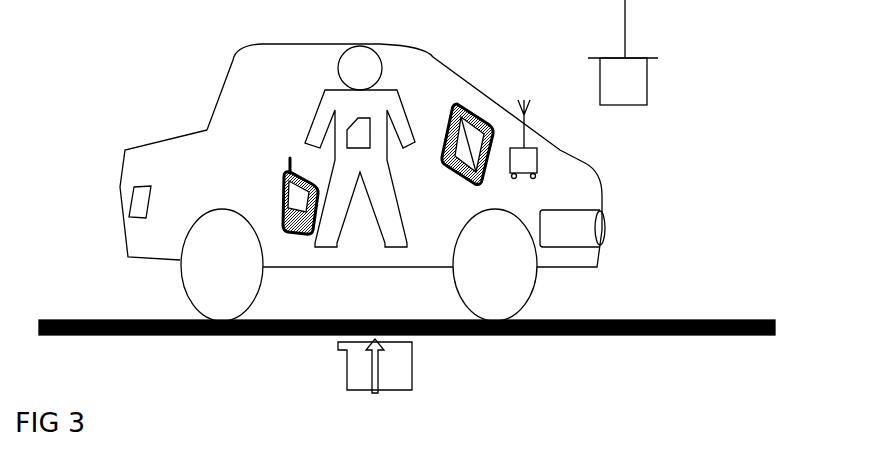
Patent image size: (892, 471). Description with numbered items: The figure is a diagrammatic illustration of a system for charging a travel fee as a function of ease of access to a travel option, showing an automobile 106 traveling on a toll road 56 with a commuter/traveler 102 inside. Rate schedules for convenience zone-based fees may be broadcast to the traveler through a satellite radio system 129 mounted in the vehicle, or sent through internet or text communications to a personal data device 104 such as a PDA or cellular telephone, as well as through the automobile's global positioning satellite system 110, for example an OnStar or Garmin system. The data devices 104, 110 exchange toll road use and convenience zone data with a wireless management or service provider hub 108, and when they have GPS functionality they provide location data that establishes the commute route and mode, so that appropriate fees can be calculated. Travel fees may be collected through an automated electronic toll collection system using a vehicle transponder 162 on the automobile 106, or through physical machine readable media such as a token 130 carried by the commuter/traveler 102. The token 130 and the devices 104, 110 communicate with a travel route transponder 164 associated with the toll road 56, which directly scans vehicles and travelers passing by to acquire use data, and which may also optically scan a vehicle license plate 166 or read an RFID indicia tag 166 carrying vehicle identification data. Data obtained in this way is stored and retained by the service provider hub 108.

The toll road 56 is at (640, 335).
The commuter/traveler 102 is at (397, 95).
The personal data device 104 is at (283, 201).
The automobile 106 is at (147, 247).
The wireless management or service provider hub 108 is at (640, 65).
The global positioning satellite system 110 is at (472, 187).
The satellite radio system 129 is at (520, 162).
The token 130 is at (347, 131).
The vehicle transponder 162 is at (568, 247).
The travel route transponder 164 is at (410, 388).
The vehicle license plate 166 is at (130, 200).